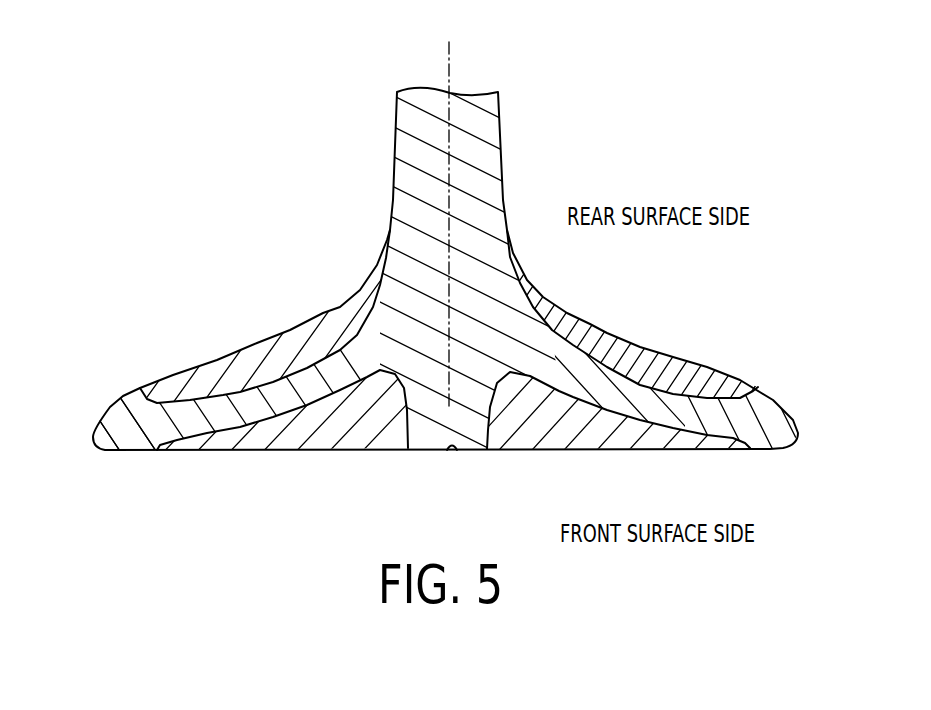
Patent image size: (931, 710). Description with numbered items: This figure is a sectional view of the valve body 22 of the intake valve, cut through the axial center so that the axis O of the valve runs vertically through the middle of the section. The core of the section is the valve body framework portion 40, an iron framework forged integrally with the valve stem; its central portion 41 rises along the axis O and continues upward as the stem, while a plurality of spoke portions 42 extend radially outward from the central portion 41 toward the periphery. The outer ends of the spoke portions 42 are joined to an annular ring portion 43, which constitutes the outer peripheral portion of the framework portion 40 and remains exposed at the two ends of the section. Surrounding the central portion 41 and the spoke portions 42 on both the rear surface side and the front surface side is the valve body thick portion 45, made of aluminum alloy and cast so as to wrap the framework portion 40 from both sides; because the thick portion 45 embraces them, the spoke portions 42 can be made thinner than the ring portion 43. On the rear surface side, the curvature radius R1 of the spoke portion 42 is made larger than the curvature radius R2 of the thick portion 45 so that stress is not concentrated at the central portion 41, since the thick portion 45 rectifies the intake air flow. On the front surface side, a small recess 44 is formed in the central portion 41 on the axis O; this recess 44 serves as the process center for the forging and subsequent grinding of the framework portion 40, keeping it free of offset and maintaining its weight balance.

The valve body 22 is at (330, 112).
The axis O is at (451, 64).
The valve body framework portion 40 is at (517, 157).
The central portion 41 is at (481, 130).
The spoke portion 42 is at (612, 388).
The ring portion 43 is at (122, 432).
The recess 44 is at (452, 452).
The valve body thick portion 45 is at (680, 353).
The curvature radius of the spoke portion R1 is at (230, 393).
The curvature radius of the valve body thick portion R2 is at (313, 325).